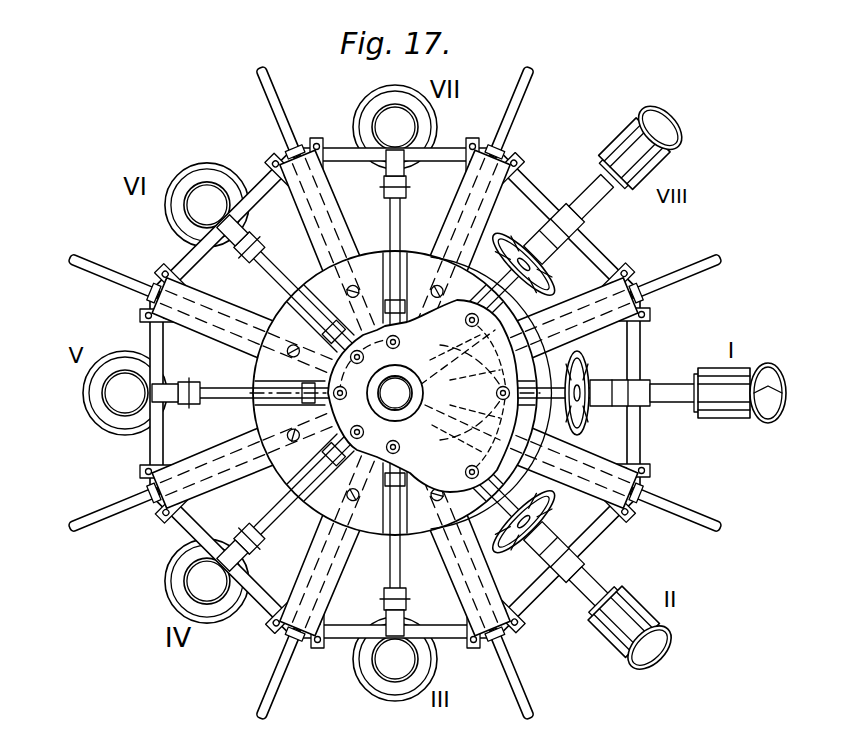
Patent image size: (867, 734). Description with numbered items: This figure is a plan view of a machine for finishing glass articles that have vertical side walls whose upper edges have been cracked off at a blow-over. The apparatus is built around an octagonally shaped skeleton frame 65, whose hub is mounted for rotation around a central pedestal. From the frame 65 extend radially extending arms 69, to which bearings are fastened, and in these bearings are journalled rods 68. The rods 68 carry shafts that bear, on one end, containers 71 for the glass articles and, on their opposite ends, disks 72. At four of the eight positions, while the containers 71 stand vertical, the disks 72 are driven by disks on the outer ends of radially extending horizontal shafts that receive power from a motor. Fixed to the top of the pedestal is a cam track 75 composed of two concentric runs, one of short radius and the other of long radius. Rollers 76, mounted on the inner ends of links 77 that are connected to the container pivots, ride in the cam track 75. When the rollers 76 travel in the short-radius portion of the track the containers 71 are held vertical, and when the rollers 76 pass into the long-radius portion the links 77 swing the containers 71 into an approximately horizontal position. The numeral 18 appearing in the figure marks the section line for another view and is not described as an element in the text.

The section line 18- 18 is at (88, 392).
The octagonally shaped skeleton frame 65 is at (306, 246).
The rods 68 is at (155, 447).
The radially extending arms 69 is at (229, 474).
The containers 71 is at (183, 578).
The disks 72 is at (113, 358).
The cam track 75 is at (422, 492).
The rollers 76 is at (402, 393).
The links 77 is at (214, 392).